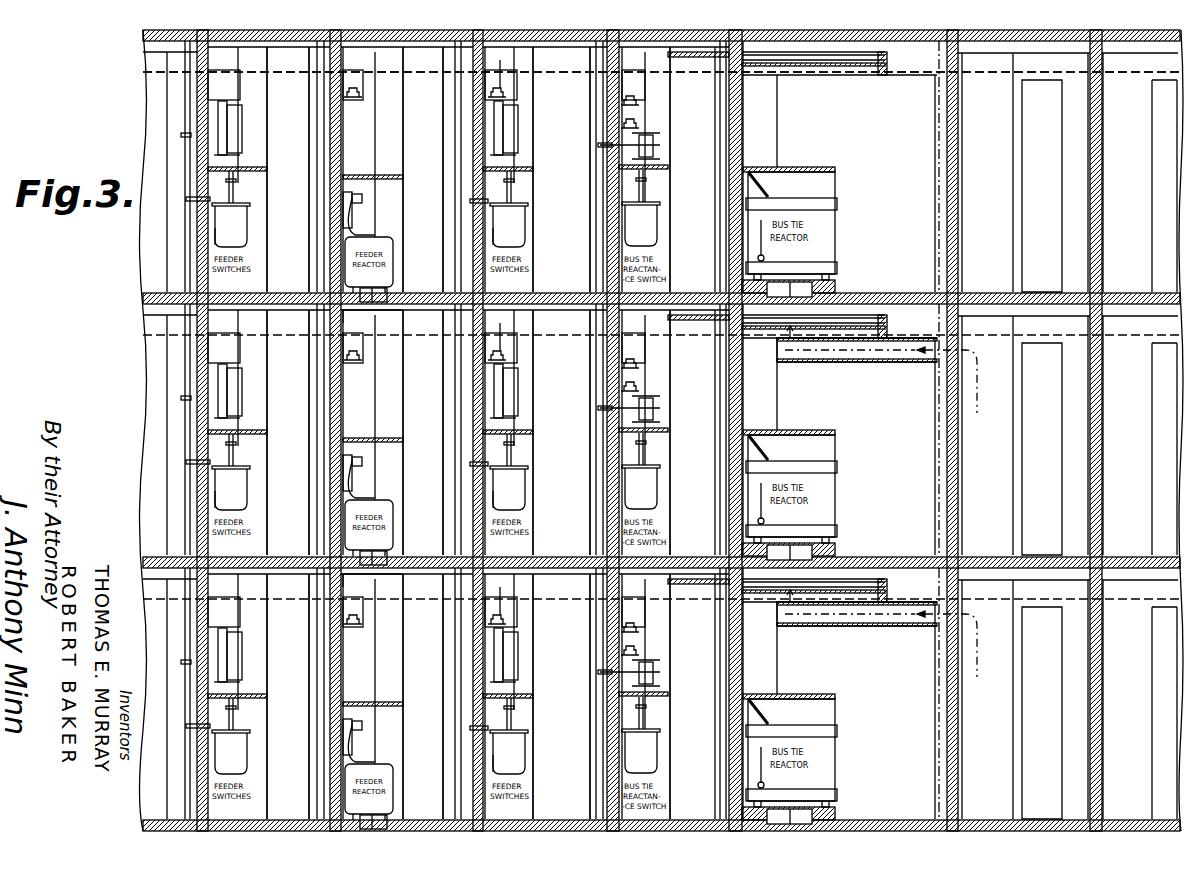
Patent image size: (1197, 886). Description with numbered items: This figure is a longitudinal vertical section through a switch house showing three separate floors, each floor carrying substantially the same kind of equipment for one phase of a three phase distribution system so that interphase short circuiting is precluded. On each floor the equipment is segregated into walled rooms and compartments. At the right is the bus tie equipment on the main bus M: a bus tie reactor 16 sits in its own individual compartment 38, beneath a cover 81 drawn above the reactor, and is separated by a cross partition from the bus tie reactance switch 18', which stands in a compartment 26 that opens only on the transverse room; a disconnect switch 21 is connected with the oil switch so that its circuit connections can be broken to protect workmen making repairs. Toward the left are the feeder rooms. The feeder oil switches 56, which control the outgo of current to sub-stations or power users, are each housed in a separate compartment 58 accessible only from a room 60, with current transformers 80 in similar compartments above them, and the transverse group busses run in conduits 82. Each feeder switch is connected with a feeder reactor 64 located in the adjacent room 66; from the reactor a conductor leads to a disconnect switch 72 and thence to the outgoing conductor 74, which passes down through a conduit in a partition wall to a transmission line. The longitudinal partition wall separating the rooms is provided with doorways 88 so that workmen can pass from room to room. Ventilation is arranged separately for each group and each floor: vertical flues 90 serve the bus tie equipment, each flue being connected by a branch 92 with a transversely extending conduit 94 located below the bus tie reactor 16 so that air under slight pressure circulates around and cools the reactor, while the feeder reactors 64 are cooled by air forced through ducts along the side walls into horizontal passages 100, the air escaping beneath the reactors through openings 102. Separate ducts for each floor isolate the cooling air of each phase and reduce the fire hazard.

The doorways 88 is at (295, 80).
The current transformers 80 is at (243, 128).
The feeder oil switches 56 is at (237, 218).
The compartment 58 is at (256, 228).
The room 60 is at (428, 433).
The conduits 82 is at (363, 97).
The disconnect switch 72 is at (362, 201).
The outgoing conductor 74 is at (390, 465).
The feeder reactor 64 is at (393, 240).
The room 66 is at (423, 433).
The openings 102 is at (390, 297).
The horizontal passages 100 is at (372, 452).
The disconnect switch 21 is at (655, 148).
The bus tie reactance switch 18' is at (665, 471).
The compartment 26 is at (658, 253).
The main bus M is at (870, 63).
The branch 92 is at (877, 501).
The reactor cover 81 is at (837, 172).
The bus tie reactors 16 is at (838, 198).
The compartment 38 is at (776, 448).
The vertical flues 90 is at (936, 222).
The transversely extending conduit 94 is at (800, 290).